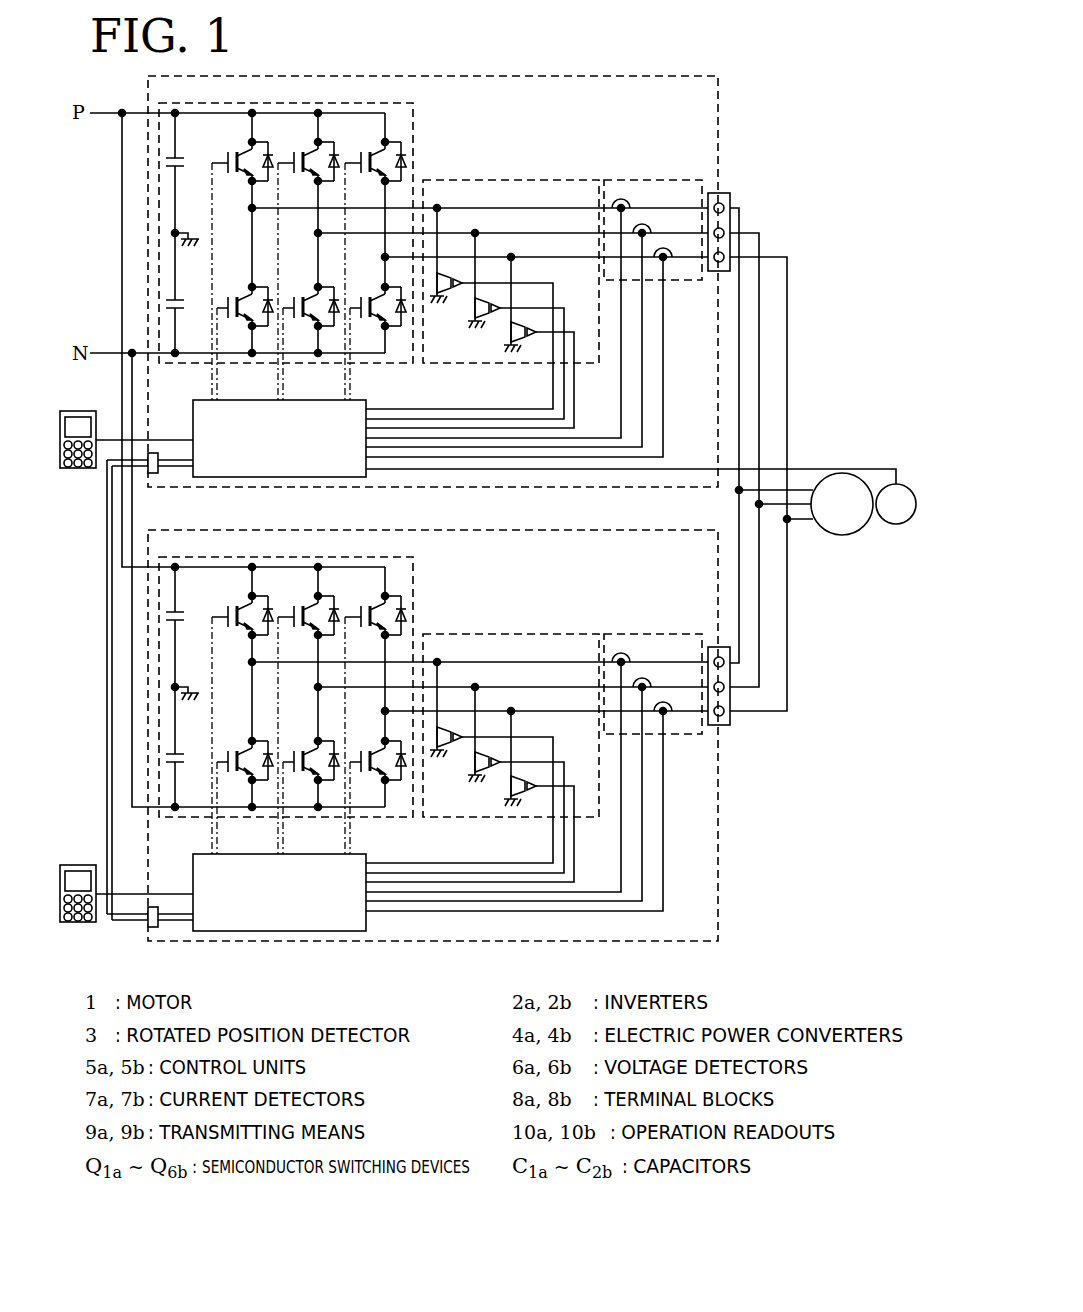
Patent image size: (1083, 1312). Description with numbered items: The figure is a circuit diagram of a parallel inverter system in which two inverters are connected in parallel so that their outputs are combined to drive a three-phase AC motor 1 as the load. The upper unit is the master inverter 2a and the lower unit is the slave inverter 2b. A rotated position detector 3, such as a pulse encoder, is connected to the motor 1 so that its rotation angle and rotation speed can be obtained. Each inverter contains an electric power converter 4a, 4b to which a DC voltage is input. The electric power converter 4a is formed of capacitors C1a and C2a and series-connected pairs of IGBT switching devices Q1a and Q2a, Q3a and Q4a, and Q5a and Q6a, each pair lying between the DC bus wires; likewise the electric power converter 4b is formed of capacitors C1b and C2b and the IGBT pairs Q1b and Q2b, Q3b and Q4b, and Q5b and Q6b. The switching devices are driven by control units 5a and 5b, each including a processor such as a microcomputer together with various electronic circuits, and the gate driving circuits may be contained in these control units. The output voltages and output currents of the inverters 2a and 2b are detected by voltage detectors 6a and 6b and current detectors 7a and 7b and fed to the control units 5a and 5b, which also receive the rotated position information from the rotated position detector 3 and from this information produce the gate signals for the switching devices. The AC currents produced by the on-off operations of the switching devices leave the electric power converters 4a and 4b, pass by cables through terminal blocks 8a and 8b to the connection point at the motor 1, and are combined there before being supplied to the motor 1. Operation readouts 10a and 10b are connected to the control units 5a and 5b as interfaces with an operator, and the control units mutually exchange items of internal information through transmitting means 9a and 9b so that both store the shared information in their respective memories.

The three-phase AC motor 1 is at (843, 535).
The rotated position detector 3 is at (893, 524).
The master inverter 2a is at (450, 76).
The slave inverter 2b is at (433, 717).
The electric power converter 4a is at (413, 116).
The electric power converter 4b is at (320, 682).
The control unit 5a is at (205, 418).
The control unit 5b is at (264, 879).
The voltage detector 6a is at (498, 180).
The voltage detector 6b is at (484, 731).
The current detector 7a is at (636, 180).
The current detector 7b is at (534, 742).
The terminal block 8a is at (731, 193).
The terminal block 8b is at (744, 704).
The transmitting means 9a is at (155, 474).
The transmitting means 9b is at (160, 935).
The operation readout 10a is at (78, 470).
The operation readout 10b is at (126, 915).
The semiconductor switching device Q1a is at (241, 152).
The semiconductor switching device Q2a is at (244, 296).
The semiconductor switching device Q3a is at (307, 152).
The semiconductor switching device Q4a is at (310, 296).
The semiconductor switching device Q5a is at (375, 152).
The semiconductor switching device Q6a is at (377, 296).
The semiconductor switching device Q1b is at (241, 606).
The semiconductor switching device Q2b is at (244, 750).
The semiconductor switching device Q3b is at (307, 606).
The semiconductor switching device Q4b is at (310, 750).
The semiconductor switching device Q5b is at (375, 606).
The semiconductor switching device Q6b is at (377, 750).
The capacitor C1a is at (188, 173).
The capacitor C2a is at (188, 293).
The capacitor C1b is at (189, 627).
The capacitor C2b is at (189, 747).